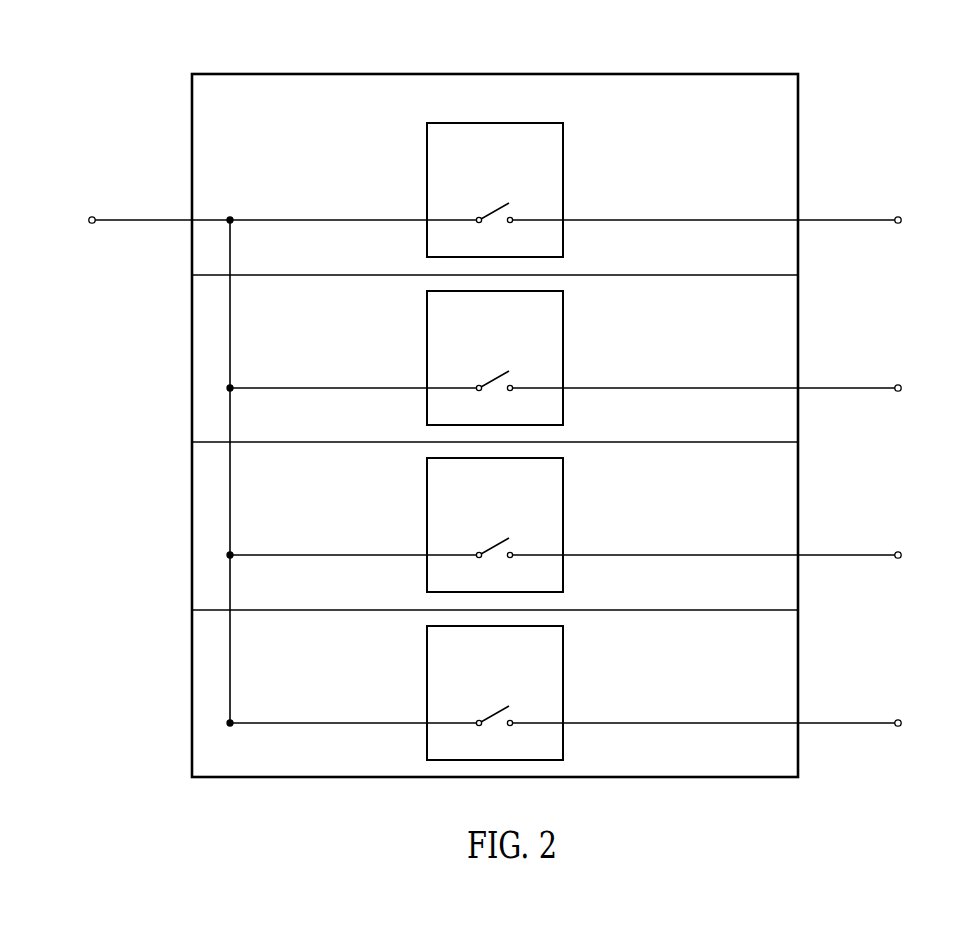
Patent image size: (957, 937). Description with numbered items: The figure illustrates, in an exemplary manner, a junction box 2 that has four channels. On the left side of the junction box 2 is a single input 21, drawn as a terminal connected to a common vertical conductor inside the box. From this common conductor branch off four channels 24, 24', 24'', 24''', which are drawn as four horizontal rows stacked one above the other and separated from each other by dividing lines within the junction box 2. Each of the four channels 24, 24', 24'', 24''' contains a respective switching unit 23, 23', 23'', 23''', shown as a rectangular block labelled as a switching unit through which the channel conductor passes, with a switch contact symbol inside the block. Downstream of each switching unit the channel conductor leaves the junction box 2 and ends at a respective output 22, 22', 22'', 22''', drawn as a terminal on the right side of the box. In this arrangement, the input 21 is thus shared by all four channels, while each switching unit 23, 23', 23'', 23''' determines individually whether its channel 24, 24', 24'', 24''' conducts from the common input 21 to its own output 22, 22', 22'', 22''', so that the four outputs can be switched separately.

The junction box 2 is at (772, 55).
The input 21 is at (89, 218).
The output 22 is at (877, 201).
The output 22' is at (877, 369).
The output 22'' is at (877, 536).
The output 22''' is at (877, 704).
The switching unit 23 is at (529, 190).
The switching unit 23' is at (532, 358).
The switching unit 23'' is at (535, 525).
The switching unit 23''' is at (538, 693).
The channel 24 is at (423, 256).
The channel 24' is at (423, 377).
The channel 24'' is at (421, 545).
The channel 24''' is at (419, 713).